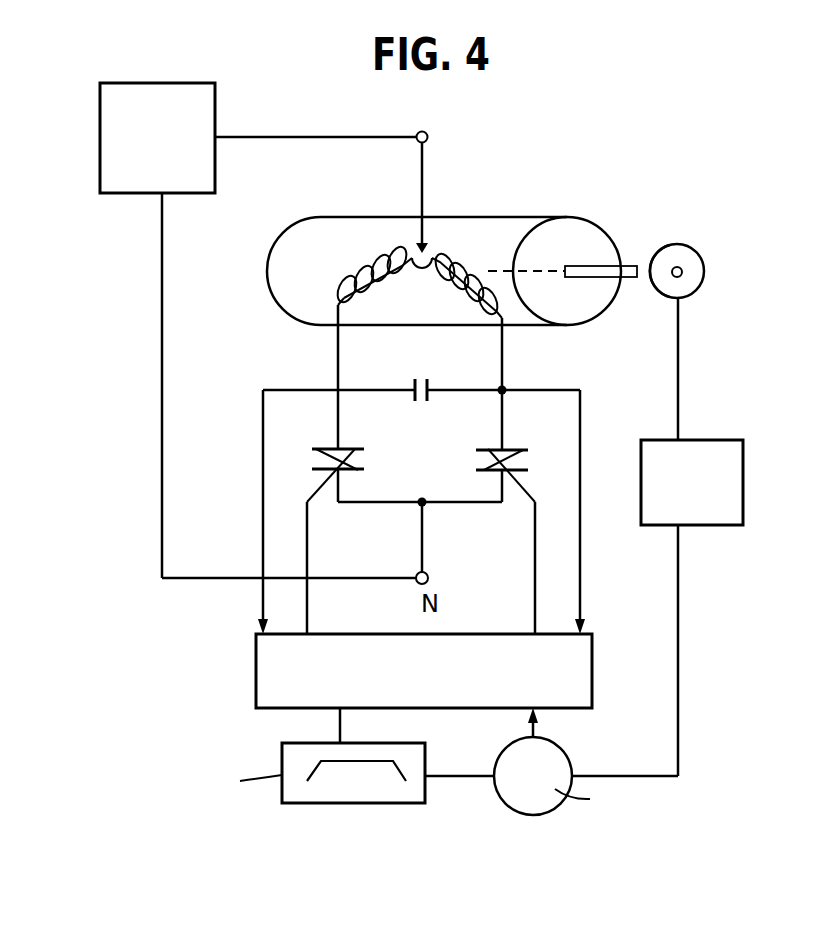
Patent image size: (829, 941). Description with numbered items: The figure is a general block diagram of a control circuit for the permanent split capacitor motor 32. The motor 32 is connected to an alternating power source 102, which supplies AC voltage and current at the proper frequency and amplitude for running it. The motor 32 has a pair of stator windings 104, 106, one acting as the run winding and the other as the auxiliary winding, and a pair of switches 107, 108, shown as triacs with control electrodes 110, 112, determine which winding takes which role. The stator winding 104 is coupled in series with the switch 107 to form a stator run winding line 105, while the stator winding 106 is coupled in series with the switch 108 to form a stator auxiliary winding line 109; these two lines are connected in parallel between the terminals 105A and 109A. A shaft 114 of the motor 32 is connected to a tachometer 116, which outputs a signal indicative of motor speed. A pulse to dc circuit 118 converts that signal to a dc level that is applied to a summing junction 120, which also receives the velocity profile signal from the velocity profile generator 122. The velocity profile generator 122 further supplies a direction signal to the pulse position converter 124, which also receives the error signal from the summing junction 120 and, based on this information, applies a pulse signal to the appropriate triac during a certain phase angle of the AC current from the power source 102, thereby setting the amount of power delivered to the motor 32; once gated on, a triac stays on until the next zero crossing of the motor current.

The alternating power source 102 is at (215, 110).
The terminal 105A is at (428, 137).
The permanent split capacitor motor 32 is at (517, 217).
The stator winding 104 is at (350, 268).
The stator winding 106 is at (466, 266).
The shaft 114 is at (618, 263).
The tachometer 116 is at (700, 253).
The stator run winding line 105 is at (334, 348).
The stator auxiliary winding line 109 is at (507, 357).
The switch 107 is at (345, 449).
The switch 108 is at (495, 450).
The control electrode 110 is at (307, 526).
The control electrode 112 is at (535, 530).
The terminal 109A is at (423, 506).
The pulse to dc circuit 118 is at (705, 440).
The pulse position converter 124 is at (256, 666).
The velocity profile generator 122 is at (425, 749).
The summing junction 120 is at (563, 745).